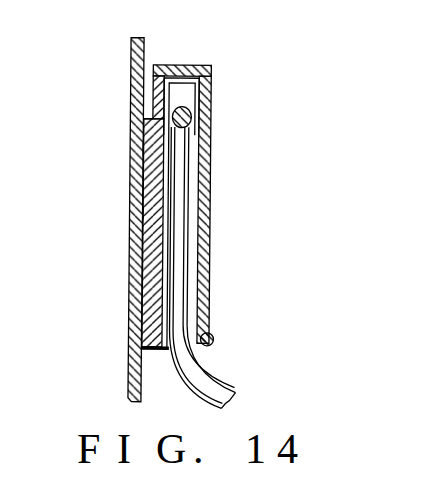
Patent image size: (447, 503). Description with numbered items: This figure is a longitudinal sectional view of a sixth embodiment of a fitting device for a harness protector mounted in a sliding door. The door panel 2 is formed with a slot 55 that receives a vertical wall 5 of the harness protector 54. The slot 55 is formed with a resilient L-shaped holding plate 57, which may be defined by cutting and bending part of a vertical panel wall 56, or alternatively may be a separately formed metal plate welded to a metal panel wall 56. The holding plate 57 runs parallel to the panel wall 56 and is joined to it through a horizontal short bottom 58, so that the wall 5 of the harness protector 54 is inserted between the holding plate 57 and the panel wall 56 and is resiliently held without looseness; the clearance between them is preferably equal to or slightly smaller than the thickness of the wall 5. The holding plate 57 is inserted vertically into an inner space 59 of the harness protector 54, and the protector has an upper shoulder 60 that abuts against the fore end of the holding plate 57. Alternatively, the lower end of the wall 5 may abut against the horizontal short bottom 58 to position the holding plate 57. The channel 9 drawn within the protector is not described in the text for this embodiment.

The door panel 2 is at (116, 88).
The vertical wall 5 is at (148, 213).
The tube channel 9 is at (186, 237).
The harness protector 54 is at (224, 111).
The slot 55 is at (177, 373).
The vertical panel wall 56 is at (137, 150).
The holding plate 57 is at (173, 152).
The horizontal short bottom 58 is at (154, 359).
The inner space 59 is at (184, 107).
The upper shoulder 60 is at (150, 116).